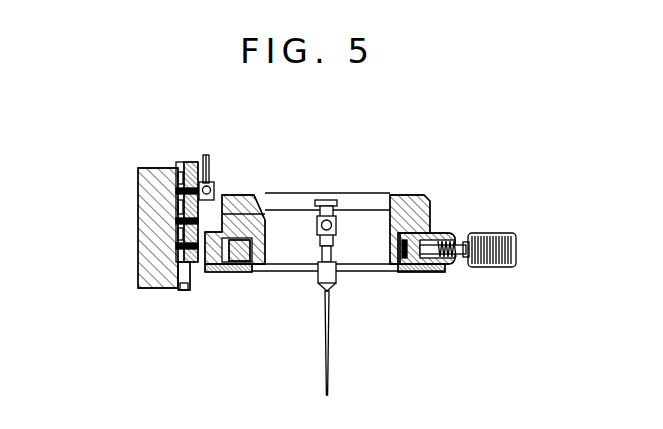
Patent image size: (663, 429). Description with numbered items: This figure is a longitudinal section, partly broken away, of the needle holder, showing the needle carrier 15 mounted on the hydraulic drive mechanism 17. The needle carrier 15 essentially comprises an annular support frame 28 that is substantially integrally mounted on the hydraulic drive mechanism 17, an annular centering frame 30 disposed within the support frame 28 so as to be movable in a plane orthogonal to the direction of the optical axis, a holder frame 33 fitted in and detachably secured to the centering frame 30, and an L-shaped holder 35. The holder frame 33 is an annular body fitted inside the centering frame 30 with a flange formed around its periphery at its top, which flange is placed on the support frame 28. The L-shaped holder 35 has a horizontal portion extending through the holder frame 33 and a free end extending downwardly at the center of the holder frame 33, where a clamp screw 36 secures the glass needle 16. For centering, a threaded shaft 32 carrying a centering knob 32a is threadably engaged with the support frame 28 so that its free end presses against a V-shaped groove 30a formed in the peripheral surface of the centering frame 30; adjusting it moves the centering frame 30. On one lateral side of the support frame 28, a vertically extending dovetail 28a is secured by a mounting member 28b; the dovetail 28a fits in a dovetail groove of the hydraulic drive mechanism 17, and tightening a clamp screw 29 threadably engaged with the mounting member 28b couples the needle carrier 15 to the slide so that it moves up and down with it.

The needle carrier 15 is at (484, 246).
The glass needle 16 is at (330, 318).
The hydraulic drive mechanism 17 is at (156, 169).
The annular support frame 28 is at (154, 245).
The dovetail 28a is at (178, 212).
The mounting member 28b is at (171, 295).
The clamp screw 29 is at (219, 190).
The annular centering frame 30 is at (406, 272).
The V-shaped groove 30a is at (228, 269).
The threaded shaft 32 is at (460, 245).
The centering knob 32a is at (517, 250).
The holder frame 33 is at (243, 196).
The L-shaped holder 35 is at (335, 241).
The clamp screw 36 is at (320, 283).